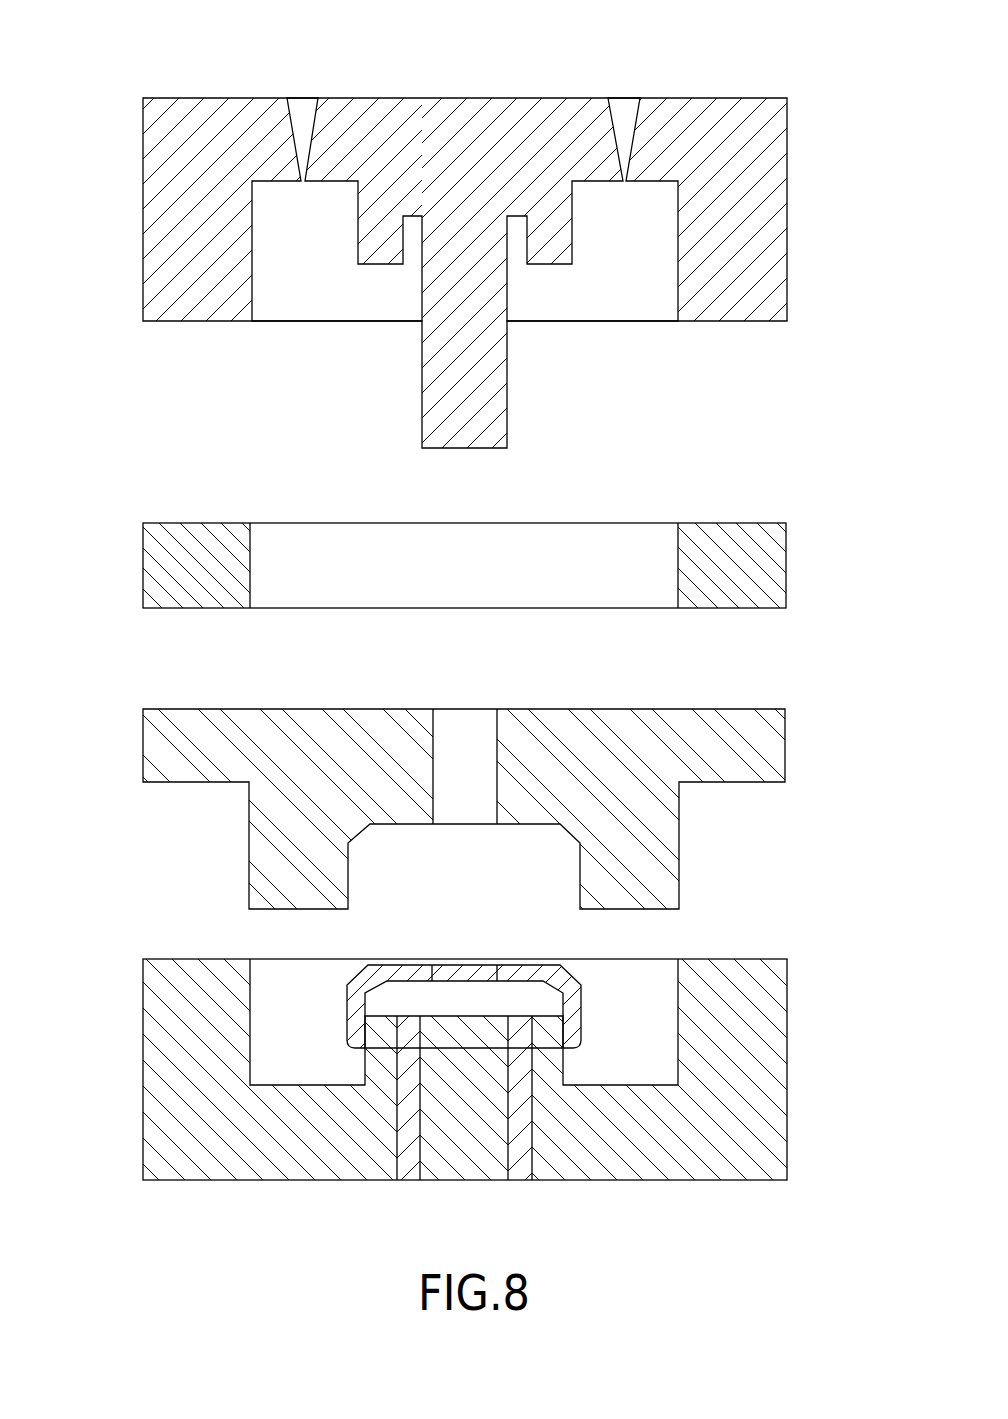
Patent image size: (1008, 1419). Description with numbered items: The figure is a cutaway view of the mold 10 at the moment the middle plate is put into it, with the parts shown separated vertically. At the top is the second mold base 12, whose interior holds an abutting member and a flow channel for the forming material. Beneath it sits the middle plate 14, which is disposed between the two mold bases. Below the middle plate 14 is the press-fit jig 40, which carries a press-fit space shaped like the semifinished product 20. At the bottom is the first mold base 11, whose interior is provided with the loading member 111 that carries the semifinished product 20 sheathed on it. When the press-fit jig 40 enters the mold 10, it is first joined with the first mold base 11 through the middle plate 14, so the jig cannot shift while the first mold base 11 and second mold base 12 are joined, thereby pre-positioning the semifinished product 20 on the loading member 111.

The mold 10 is at (848, 19).
The second mold base 12 is at (755, 220).
The middle plate 14 is at (773, 563).
The press-fit jig 40 is at (163, 753).
The semifinished product 20 is at (573, 978).
The first mold base 11 is at (770, 1090).
The loading member 111 is at (383, 1057).